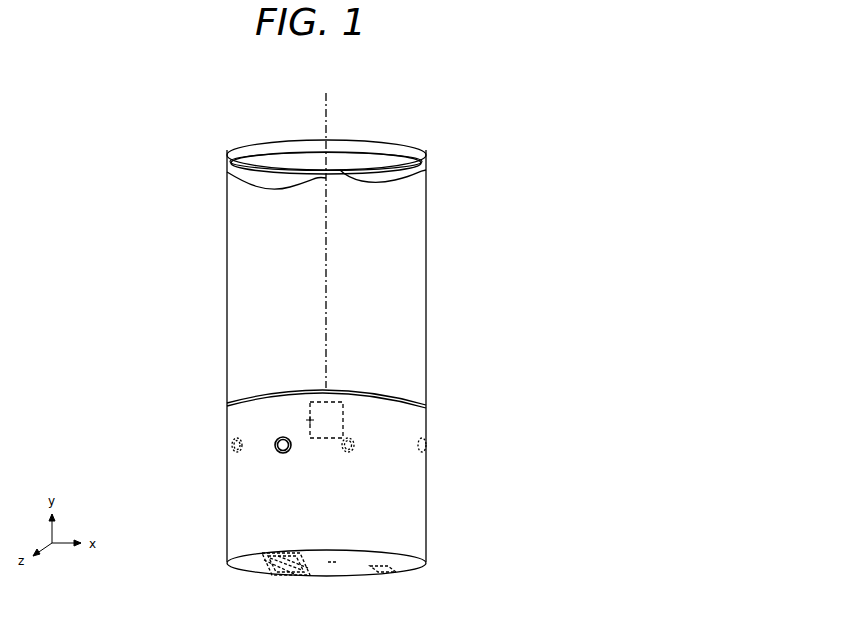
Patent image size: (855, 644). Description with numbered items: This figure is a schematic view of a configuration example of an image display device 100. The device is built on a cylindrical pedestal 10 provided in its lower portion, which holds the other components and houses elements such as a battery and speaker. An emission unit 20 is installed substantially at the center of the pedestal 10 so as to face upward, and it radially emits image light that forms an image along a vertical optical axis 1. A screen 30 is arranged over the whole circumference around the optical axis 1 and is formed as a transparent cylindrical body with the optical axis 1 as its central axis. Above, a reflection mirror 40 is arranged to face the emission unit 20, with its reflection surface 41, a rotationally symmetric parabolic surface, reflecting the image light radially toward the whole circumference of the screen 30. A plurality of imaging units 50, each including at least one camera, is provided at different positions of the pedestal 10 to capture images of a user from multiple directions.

The image display device 100 is at (316, 323).
The optical axis 1 is at (326, 120).
The reflection mirror 40 is at (307, 170).
The reflection surface 41 is at (227, 172).
The screen 30 is at (426, 313).
The emission unit 20 is at (310, 416).
The imaging units 50 is at (343, 452).
The pedestal 10 is at (426, 497).